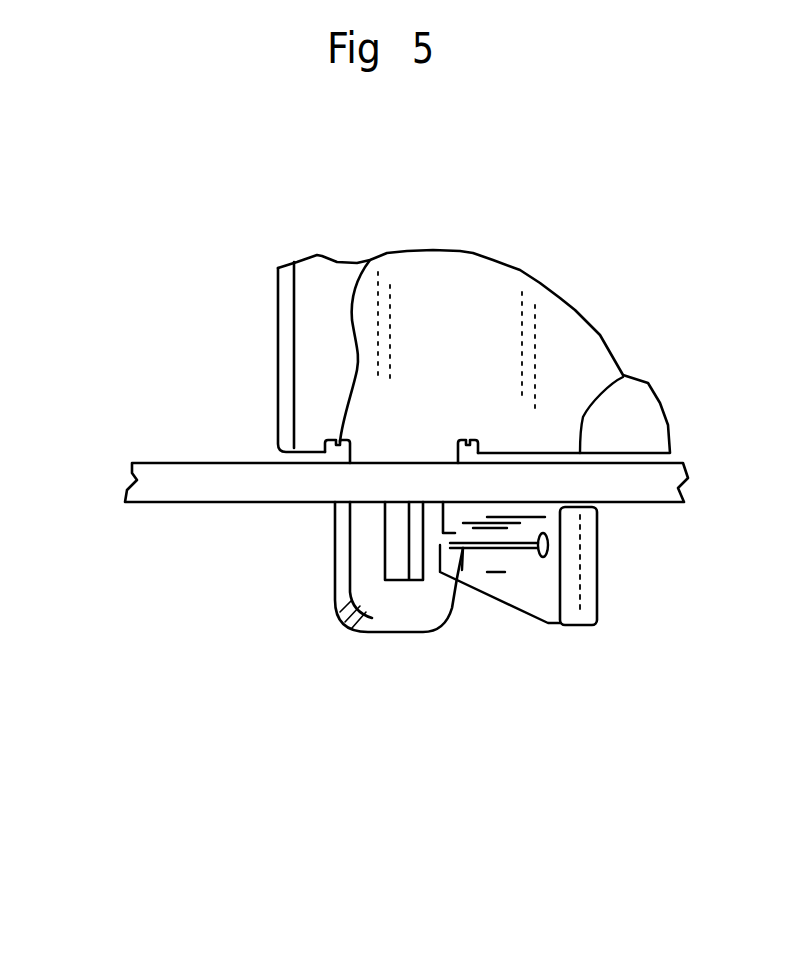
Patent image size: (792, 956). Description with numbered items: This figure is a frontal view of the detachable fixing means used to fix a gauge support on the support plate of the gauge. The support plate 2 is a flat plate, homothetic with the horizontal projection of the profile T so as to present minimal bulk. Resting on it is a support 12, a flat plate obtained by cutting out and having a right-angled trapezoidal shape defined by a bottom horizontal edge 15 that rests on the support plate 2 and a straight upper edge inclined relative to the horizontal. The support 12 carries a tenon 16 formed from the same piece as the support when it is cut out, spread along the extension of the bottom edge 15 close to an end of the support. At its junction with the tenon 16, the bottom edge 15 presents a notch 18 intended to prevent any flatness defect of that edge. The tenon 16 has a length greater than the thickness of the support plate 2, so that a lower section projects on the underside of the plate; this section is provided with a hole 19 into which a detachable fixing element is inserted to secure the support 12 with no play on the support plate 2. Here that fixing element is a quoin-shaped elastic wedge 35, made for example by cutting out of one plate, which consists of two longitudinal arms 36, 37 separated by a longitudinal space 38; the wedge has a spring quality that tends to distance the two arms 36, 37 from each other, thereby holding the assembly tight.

The support plate 2 is at (187, 485).
The support 12 is at (498, 298).
The bottom horizontal edge 15 is at (623, 377).
The tenon 16 is at (362, 598).
The notch 18 is at (372, 258).
The hole 19 is at (400, 527).
The elastic wedge 35 is at (612, 562).
The longitudinal arm 36 is at (492, 519).
The longitudinal arm 37 is at (490, 572).
The longitudinal space 38 is at (462, 570).